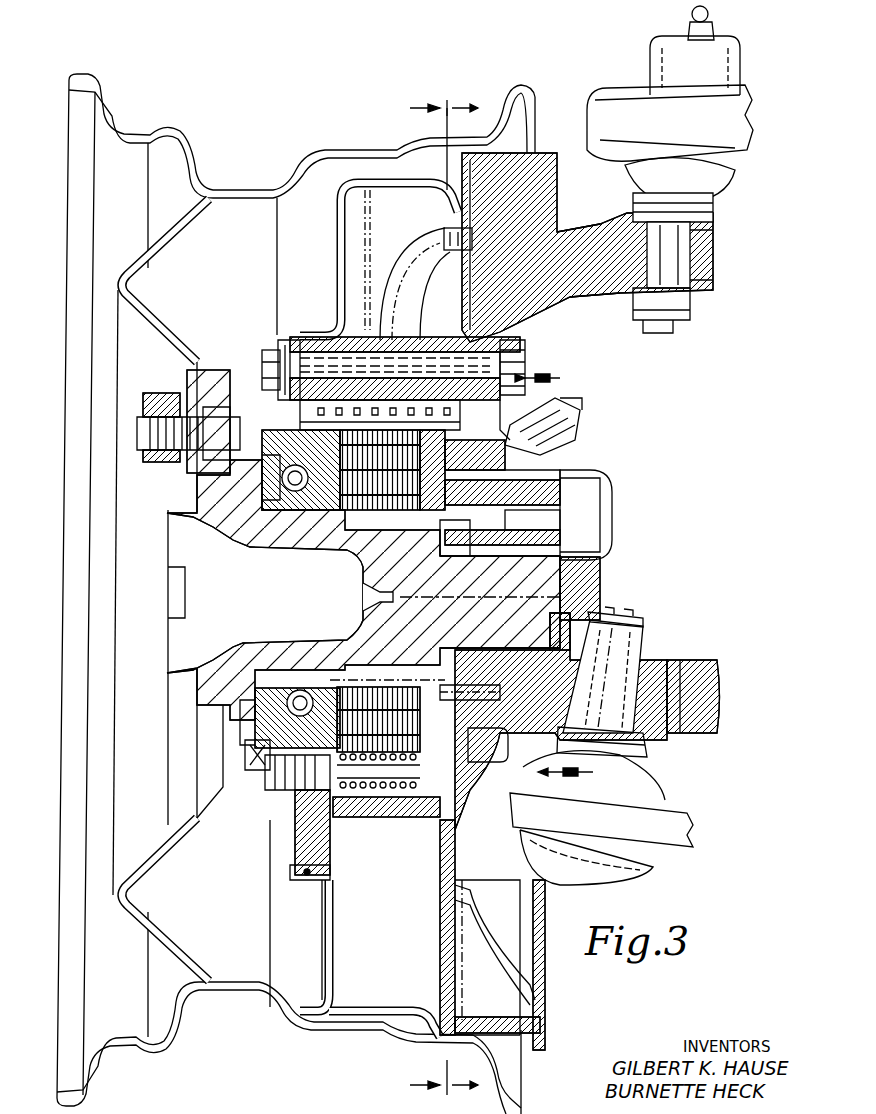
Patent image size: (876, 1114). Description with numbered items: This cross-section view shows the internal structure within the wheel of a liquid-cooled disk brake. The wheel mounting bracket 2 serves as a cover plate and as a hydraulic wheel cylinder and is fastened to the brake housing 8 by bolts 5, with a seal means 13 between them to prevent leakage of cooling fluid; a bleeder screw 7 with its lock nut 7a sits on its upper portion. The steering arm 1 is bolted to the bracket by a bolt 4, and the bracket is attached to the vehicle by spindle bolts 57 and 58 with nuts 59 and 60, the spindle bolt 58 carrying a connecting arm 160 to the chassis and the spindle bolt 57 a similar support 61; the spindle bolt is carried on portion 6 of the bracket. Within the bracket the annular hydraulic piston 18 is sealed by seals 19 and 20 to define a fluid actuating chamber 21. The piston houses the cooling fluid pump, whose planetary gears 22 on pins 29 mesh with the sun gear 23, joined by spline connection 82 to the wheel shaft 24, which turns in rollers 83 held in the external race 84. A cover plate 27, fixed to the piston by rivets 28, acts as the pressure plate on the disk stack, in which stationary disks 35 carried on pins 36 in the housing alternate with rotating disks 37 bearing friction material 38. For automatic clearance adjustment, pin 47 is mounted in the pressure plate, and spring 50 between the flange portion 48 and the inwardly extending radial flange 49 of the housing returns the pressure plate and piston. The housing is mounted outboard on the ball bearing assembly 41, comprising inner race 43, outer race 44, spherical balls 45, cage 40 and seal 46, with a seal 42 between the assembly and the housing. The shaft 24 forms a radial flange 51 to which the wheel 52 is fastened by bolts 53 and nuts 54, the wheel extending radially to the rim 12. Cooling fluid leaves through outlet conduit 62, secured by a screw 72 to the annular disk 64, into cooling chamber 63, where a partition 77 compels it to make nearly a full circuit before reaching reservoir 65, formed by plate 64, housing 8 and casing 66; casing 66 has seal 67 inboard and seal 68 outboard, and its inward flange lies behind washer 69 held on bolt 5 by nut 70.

The steering arm 1 is at (720, 696).
The wheel mounting bracket 2 is at (598, 228).
The bolt 4 is at (444, 595).
The bolts 5 is at (512, 355).
The portion of the bracket 6 is at (716, 255).
The bleeder screw 7 is at (582, 420).
The lock nut 7a is at (578, 440).
The brake housing 8 is at (379, 259).
The wheel rim 12 is at (528, 84).
The seal means 13 is at (470, 800).
The hydraulic piston 18 is at (560, 495).
The seal 19 is at (612, 490).
The seal 20 is at (488, 745).
The fluid actuating chamber 21 is at (550, 410).
The planetary gears 22 is at (425, 505).
The sun gear 23 is at (470, 557).
The wheel shaft 24 is at (580, 592).
The cover plate 27 is at (410, 670).
The rivets 28 is at (505, 692).
The pins 29 is at (560, 525).
The stationary disks 35 is at (300, 412).
The pins 36 is at (395, 376).
The rotating disks 37 is at (372, 505).
The friction material 38 is at (378, 545).
The cage 40 is at (315, 690).
The ball bearing assembly 41 is at (298, 690).
The seal 42 is at (265, 775).
The inner race 43 is at (300, 492).
The outer race 44 is at (258, 748).
The spherical balls 45 is at (270, 500).
The seal 46 is at (250, 705).
The pin 47 is at (380, 778).
The flange portion 48 is at (405, 795).
The inwardly extending radial flange 49 is at (300, 830).
The spring 50 is at (390, 820).
The radial flange 51 is at (208, 818).
The wheel 52 is at (200, 214).
The bolts 53 is at (140, 417).
The nuts 54 is at (160, 462).
The spindle bolt 57 is at (645, 660).
The spindle bolt 58 is at (714, 212).
The nut 59 is at (642, 618).
The nut 60 is at (690, 310).
The support 61 is at (680, 822).
The outlet conduit 62 is at (442, 235).
The cooling chamber 63 is at (532, 998).
The annular disk 64 is at (442, 947).
The reservoir 65 is at (340, 968).
The casing 66 is at (326, 938).
The seal 67 is at (462, 1024).
The seal 68 is at (302, 872).
The washer 69 is at (278, 350).
The nut 70 is at (262, 362).
The screw 72 is at (415, 284).
The partition 77 is at (560, 183).
The spline connection 82 is at (445, 562).
The rollers 83 is at (560, 598).
The external race 84 is at (565, 545).
The connecting arm 160 is at (744, 118).